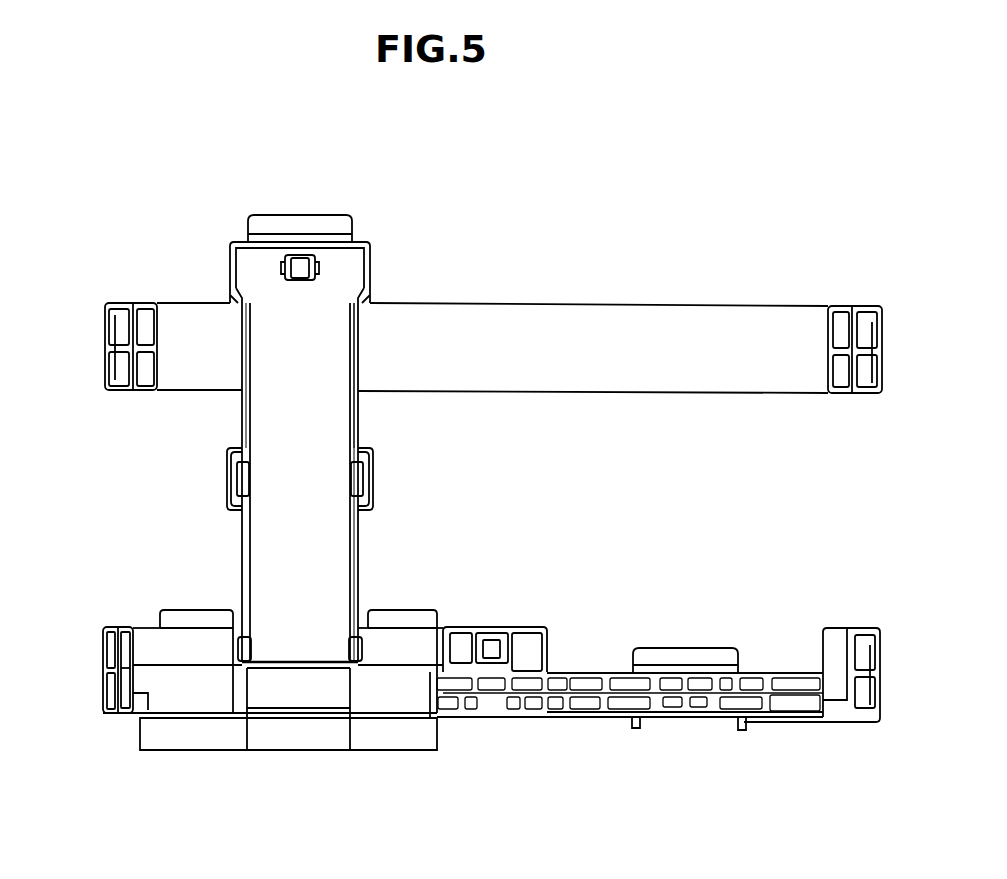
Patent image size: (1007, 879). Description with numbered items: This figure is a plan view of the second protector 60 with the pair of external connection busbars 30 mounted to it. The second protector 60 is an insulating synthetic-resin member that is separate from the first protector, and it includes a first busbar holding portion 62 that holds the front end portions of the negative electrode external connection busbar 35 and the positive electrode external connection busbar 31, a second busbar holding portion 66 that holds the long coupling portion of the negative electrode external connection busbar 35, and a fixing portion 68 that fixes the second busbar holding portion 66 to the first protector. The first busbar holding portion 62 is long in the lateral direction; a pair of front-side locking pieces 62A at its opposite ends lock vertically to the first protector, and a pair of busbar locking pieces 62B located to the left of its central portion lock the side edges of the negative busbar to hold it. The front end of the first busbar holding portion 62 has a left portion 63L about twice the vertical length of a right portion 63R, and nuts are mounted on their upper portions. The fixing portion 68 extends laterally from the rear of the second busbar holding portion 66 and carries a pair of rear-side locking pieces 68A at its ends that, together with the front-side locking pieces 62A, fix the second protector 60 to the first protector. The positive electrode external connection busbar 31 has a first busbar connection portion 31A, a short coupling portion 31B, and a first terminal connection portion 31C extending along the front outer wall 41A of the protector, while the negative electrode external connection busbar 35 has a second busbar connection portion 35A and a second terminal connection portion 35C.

The second protector 60 is at (720, 232).
The positive electrode external connection busbar 31 is at (242, 543).
The external connection busbars 30 is at (251, 455).
The first busbar connection portion 31A is at (298, 222).
The short coupling portion 31B is at (323, 556).
The first terminal connection portion 31C is at (303, 722).
The second busbar holding portion 66 is at (240, 415).
The fixing portion 68 is at (471, 335).
The rear-side locking pieces 68A is at (107, 341).
The first busbar holding portion 62 is at (838, 708).
The front-side locking pieces 62A is at (103, 668).
The busbar locking pieces 62B is at (240, 657).
The left portion 63L is at (175, 700).
The right portion 63R is at (602, 713).
The front outer wall 41A is at (497, 720).
The negative electrode external connection busbar 35 is at (742, 642).
The second busbar connection portion 35A is at (685, 657).
The second terminal connection portion 35C is at (688, 713).